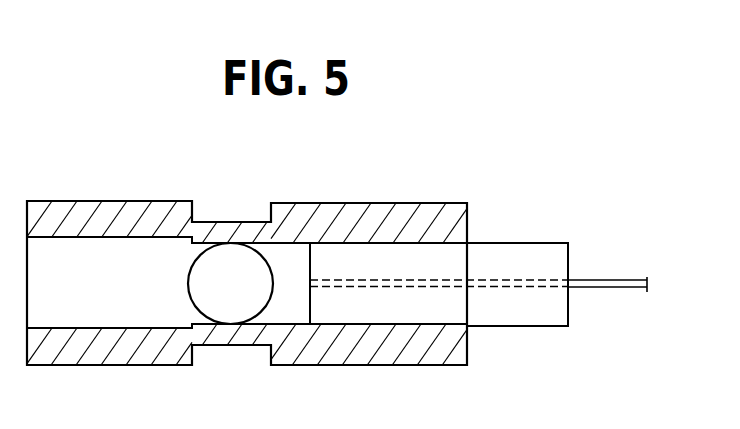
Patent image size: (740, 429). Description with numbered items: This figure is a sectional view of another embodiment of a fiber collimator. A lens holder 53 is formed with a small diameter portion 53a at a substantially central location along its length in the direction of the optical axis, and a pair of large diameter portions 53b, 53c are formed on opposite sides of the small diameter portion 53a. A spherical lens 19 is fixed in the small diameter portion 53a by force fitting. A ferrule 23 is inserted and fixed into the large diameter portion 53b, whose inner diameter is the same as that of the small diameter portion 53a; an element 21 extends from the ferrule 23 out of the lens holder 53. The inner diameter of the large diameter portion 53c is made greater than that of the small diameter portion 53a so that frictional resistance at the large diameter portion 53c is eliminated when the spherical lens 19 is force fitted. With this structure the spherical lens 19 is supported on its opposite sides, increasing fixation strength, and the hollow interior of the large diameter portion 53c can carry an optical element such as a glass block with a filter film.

The lens holder 53 is at (412, 196).
The small diameter portion 53a is at (232, 222).
The large diameter portion 53b is at (342, 203).
The large diameter portion 53c is at (79, 200).
The spherical lens 19 is at (232, 312).
The ferrule 23 is at (537, 318).
The rod 21 is at (618, 280).